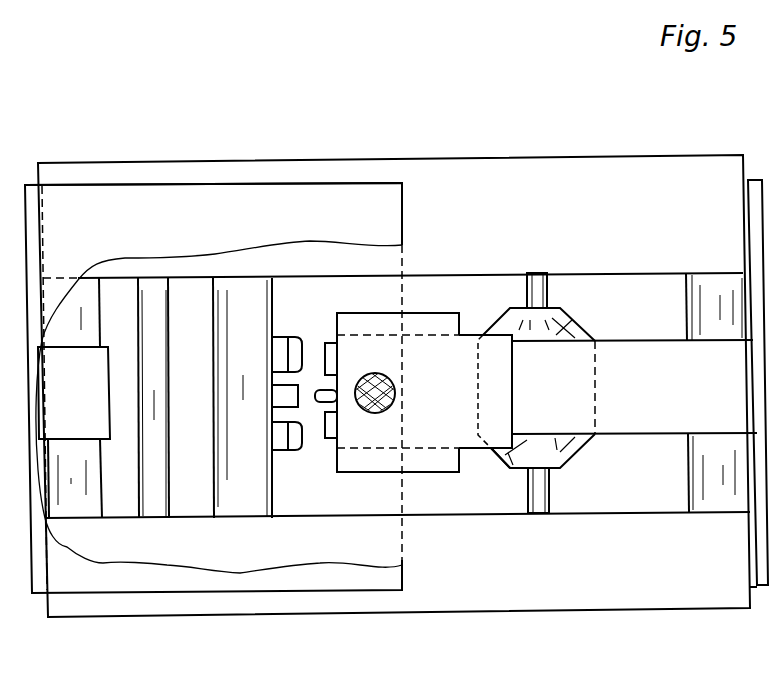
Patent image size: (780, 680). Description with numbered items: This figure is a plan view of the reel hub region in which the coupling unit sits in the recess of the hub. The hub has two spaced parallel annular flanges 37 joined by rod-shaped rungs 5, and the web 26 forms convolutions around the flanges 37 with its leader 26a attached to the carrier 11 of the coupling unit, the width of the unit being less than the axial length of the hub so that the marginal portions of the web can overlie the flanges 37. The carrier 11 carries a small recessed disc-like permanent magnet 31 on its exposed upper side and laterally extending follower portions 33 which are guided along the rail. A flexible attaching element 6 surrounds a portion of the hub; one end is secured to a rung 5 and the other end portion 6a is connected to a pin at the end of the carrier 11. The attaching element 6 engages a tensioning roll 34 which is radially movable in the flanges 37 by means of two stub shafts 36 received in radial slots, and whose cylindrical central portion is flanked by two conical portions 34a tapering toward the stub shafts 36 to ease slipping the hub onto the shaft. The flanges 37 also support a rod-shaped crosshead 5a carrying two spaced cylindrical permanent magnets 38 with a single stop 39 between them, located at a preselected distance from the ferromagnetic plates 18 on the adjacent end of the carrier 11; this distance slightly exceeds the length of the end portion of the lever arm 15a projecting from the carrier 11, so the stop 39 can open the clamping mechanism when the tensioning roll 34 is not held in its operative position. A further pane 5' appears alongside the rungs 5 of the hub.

The rung 5 is at (433, 392).
The outer glass pane 5' is at (91, 398).
The crosshead 5a is at (232, 294).
The attaching element 6 is at (98, 402).
The end portion of attaching element 6a is at (503, 468).
The carrier 11 is at (462, 433).
The lever arm 15a is at (325, 355).
The ferromagnetic plate 18 is at (337, 347).
The web 26 is at (39, 617).
The leader 26a is at (404, 566).
The permanent magnet 31 is at (375, 373).
The follower portion 33 is at (417, 325).
The tensioning roll 34 is at (607, 401).
The conical portion 34a is at (507, 327).
The stub shaft 36 is at (548, 286).
The flange 37 is at (597, 173).
The permanent magnet 38 is at (302, 350).
The stop 39 is at (283, 397).